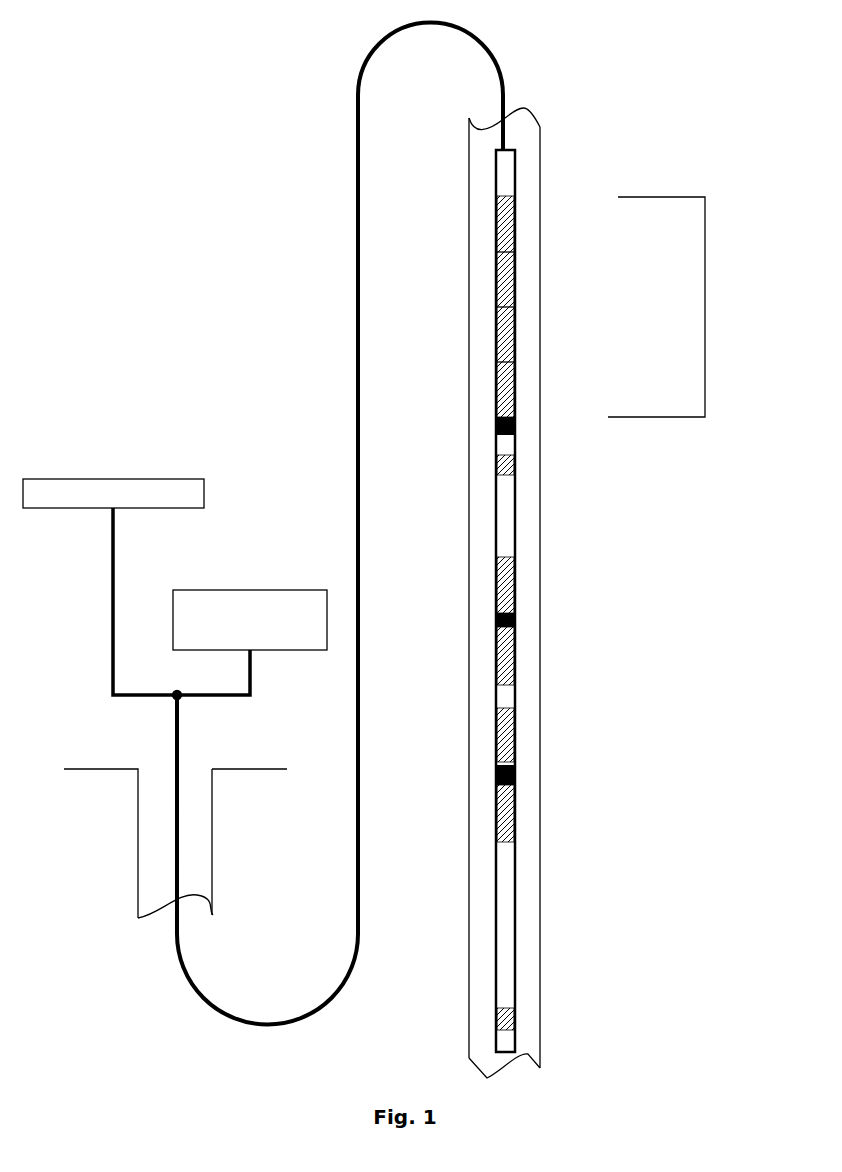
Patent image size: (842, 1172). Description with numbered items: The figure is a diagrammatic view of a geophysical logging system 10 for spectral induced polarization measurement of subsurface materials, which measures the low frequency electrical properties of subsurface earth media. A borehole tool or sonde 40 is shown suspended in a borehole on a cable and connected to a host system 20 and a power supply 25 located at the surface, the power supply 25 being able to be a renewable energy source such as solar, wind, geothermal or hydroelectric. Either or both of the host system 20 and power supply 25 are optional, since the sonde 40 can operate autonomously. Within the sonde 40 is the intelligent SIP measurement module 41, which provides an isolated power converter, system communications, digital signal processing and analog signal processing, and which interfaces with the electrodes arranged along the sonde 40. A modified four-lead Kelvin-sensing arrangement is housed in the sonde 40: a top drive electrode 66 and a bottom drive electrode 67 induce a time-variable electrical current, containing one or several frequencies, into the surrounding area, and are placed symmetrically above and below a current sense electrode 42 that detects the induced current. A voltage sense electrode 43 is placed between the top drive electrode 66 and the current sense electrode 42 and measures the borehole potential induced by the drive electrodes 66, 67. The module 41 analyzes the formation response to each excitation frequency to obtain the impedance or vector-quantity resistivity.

The geophysical logging system 10 is at (203, 118).
The host system 20 is at (41, 493).
The power supply 25 is at (186, 604).
The sonde 40 is at (507, 170).
The intelligent SIP measurement module 41 is at (705, 288).
The drive electrode 66 is at (515, 467).
The voltage sense electrode 43 is at (515, 618).
The current sense electrode 42 is at (515, 775).
The drive electrode 67 is at (515, 1018).